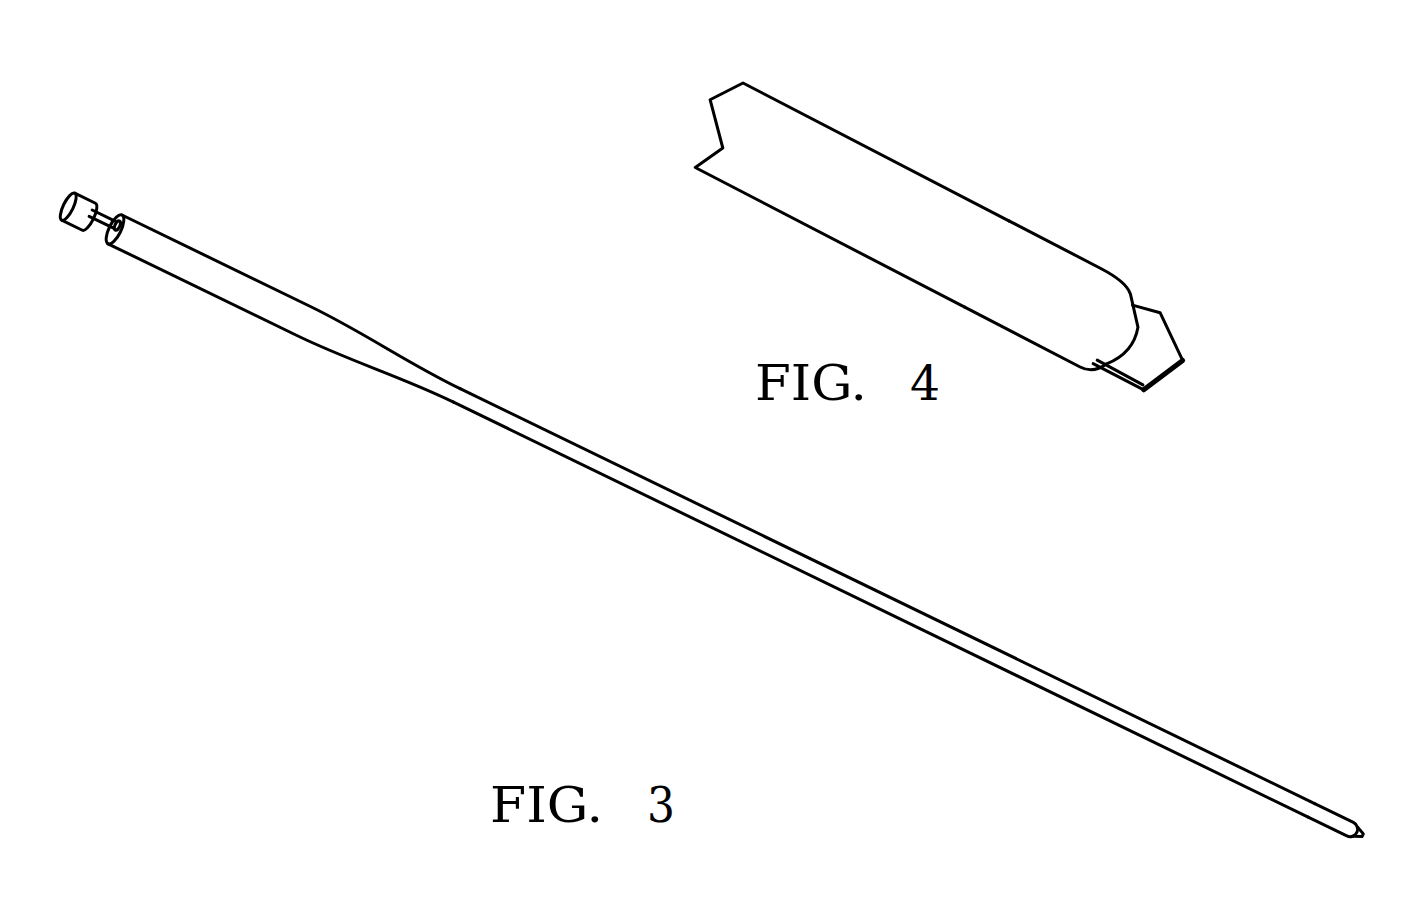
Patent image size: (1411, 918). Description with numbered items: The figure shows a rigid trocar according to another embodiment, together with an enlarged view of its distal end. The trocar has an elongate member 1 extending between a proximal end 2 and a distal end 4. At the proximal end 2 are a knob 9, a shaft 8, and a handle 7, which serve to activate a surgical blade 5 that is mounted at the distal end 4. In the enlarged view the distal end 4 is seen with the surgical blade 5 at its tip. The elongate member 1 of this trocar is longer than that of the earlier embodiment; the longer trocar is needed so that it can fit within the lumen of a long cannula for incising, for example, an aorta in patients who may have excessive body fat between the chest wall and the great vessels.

In FIG. 3, the elongate member 1 is at (850, 583).
In FIG. 4, the elongate member 1 is at (825, 133).
In FIG. 3, the proximal end 2 is at (283, 279).
In FIG. 3, the distal end 4 is at (1340, 822).
In FIG. 4, the distal end 4 is at (1073, 252).
In FIG. 3, the surgical blade 5 is at (1370, 832).
In FIG. 4, the surgical blade 5 is at (1167, 375).
In FIG. 3, the handle 7 is at (247, 313).
In FIG. 3, the shaft 8 is at (102, 240).
In FIG. 3, the knob 9 is at (70, 233).